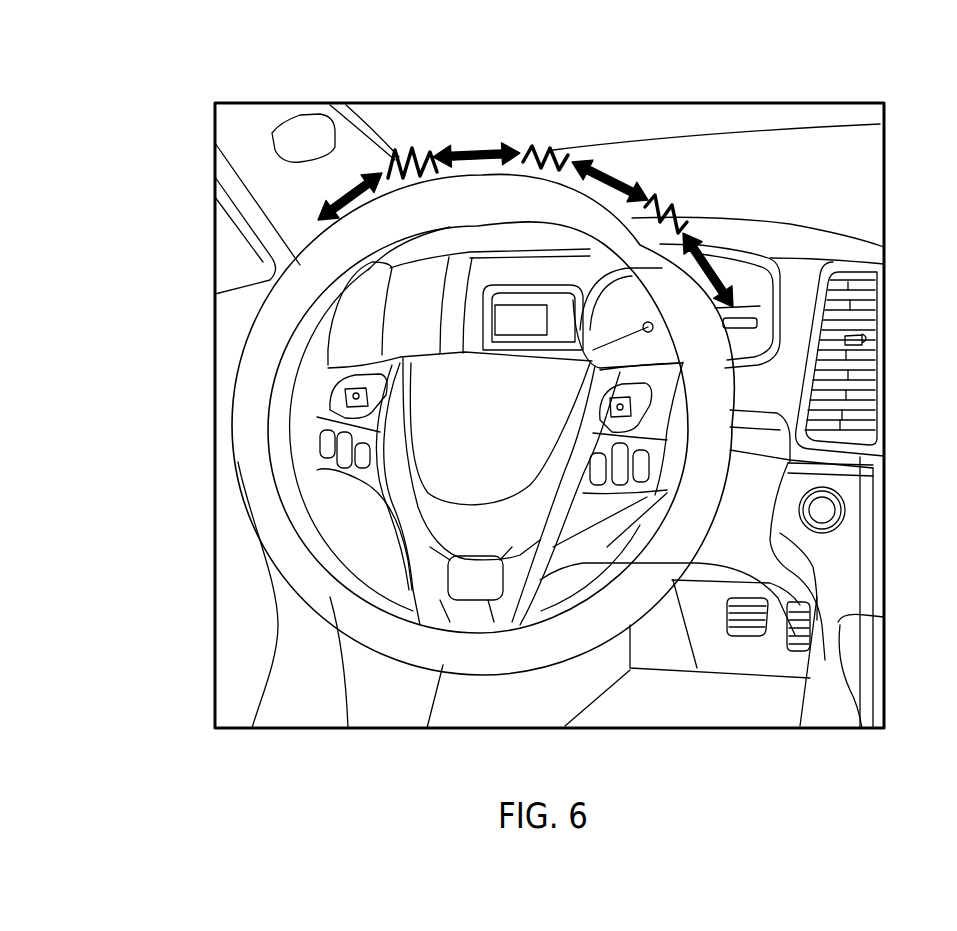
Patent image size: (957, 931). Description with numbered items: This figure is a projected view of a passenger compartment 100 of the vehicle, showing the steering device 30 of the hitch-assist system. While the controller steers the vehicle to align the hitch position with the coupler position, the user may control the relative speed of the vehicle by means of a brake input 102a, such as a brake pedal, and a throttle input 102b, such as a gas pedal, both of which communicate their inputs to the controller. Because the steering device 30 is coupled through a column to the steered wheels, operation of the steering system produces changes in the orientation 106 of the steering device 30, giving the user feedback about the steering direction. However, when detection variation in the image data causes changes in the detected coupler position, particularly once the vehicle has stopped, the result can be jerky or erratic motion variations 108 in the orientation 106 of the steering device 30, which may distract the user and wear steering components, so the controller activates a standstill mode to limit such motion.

The passenger compartment 100 is at (226, 329).
The steering device 30 is at (272, 470).
The orientation 106 is at (347, 187).
The motion variations 108 is at (407, 160).
The brake input 102a is at (753, 636).
The throttle input 102b is at (786, 645).